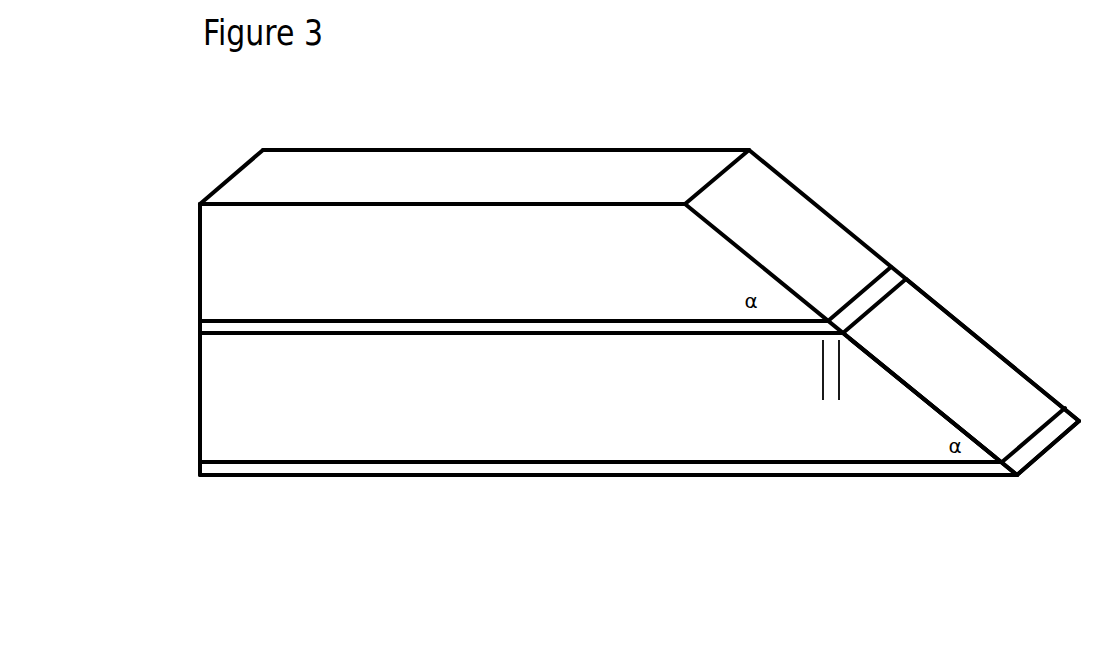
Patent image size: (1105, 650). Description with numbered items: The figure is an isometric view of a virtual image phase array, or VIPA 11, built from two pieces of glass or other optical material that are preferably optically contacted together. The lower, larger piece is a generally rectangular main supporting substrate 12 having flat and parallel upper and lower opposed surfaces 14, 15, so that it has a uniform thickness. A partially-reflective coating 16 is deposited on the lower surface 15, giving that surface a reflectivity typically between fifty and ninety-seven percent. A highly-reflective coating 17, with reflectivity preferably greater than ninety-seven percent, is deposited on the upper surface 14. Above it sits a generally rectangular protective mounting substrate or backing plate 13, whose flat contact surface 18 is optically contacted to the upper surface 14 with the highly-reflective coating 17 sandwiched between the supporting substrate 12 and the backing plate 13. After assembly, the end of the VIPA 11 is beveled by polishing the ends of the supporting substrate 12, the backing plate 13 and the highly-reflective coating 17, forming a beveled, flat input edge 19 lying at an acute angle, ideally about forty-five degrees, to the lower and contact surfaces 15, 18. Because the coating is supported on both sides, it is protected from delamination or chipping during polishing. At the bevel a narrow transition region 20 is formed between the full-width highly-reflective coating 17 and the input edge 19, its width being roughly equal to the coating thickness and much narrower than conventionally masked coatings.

The virtual image phase array (VIPA) 11 is at (523, 127).
The main supporting substrate 12 is at (195, 420).
The backing plate 13 is at (208, 190).
The upper surface 14 is at (291, 342).
The lower surface 15 is at (661, 449).
The partially-reflective coating 16 is at (520, 470).
The highly-reflective coating 17 is at (208, 328).
The contact surface 18 is at (243, 316).
The input edge 19 is at (903, 346).
The transition region 20 is at (830, 390).